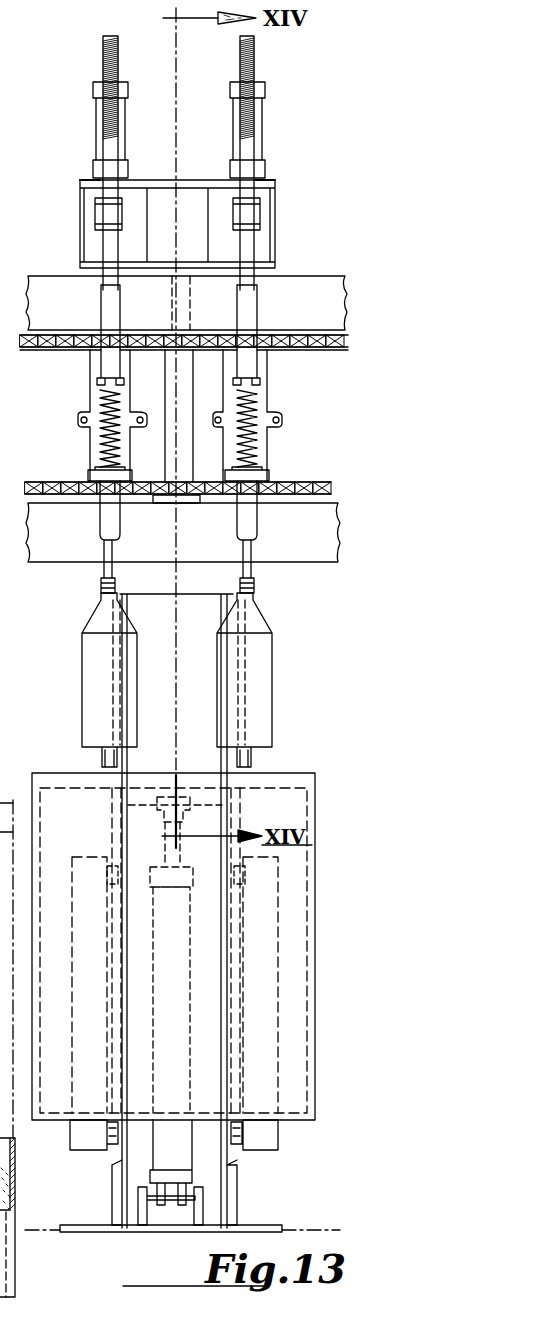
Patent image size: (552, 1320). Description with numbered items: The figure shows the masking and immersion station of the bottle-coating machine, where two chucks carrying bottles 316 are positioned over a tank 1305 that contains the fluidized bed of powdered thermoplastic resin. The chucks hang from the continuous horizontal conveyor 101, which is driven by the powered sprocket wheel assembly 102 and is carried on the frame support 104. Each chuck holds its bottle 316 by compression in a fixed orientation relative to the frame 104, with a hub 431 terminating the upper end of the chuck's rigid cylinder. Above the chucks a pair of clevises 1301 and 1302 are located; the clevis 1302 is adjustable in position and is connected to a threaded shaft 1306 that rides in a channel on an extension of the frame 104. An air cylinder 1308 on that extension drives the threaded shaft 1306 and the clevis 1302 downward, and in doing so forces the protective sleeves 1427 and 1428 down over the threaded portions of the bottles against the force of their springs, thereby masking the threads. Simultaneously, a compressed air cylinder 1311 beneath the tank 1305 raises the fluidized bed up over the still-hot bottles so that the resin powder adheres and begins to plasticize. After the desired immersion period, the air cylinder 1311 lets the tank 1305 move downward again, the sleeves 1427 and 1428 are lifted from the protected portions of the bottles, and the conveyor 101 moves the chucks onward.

The threaded shaft 1306 is at (253, 63).
The air cylinder 1308 is at (258, 128).
The frame support 104 is at (312, 293).
The continuous horizontal conveyor 101 is at (329, 349).
The powered sprocket wheel assembly 102 is at (308, 349).
The clevis 1301 is at (90, 360).
The clevis 1302 is at (258, 370).
The hub 431 is at (98, 390).
The protective sleeve 1428 is at (108, 520).
The protective sleeve 1427 is at (250, 522).
The bottle 316 is at (262, 698).
The tank 1305 is at (300, 1075).
The compressed air cylinder 1311 is at (176, 1160).